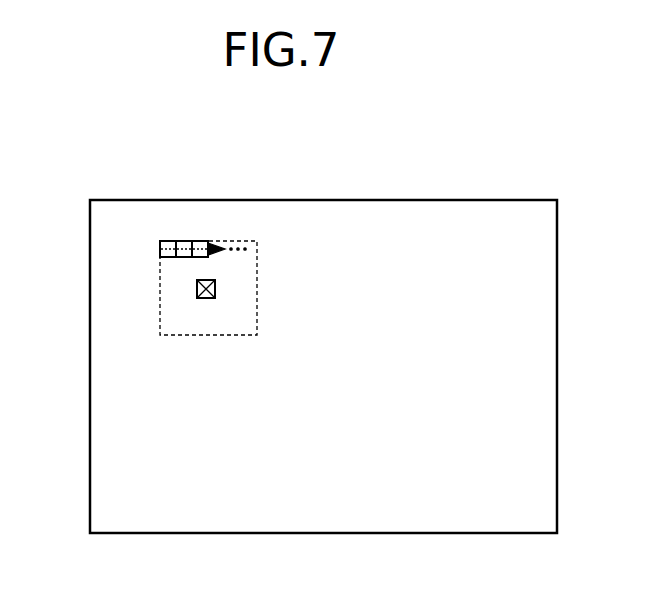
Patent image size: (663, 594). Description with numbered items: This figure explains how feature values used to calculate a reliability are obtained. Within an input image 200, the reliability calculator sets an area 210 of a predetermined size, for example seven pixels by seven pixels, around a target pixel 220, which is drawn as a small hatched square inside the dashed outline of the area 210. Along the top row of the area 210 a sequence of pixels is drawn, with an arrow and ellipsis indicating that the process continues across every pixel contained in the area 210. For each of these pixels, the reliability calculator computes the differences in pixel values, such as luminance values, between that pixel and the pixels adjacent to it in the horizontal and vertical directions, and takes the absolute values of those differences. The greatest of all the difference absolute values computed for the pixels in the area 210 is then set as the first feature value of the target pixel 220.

The input image 200 is at (490, 200).
The area 210 is at (249, 240).
The target pixel 220 is at (197, 296).